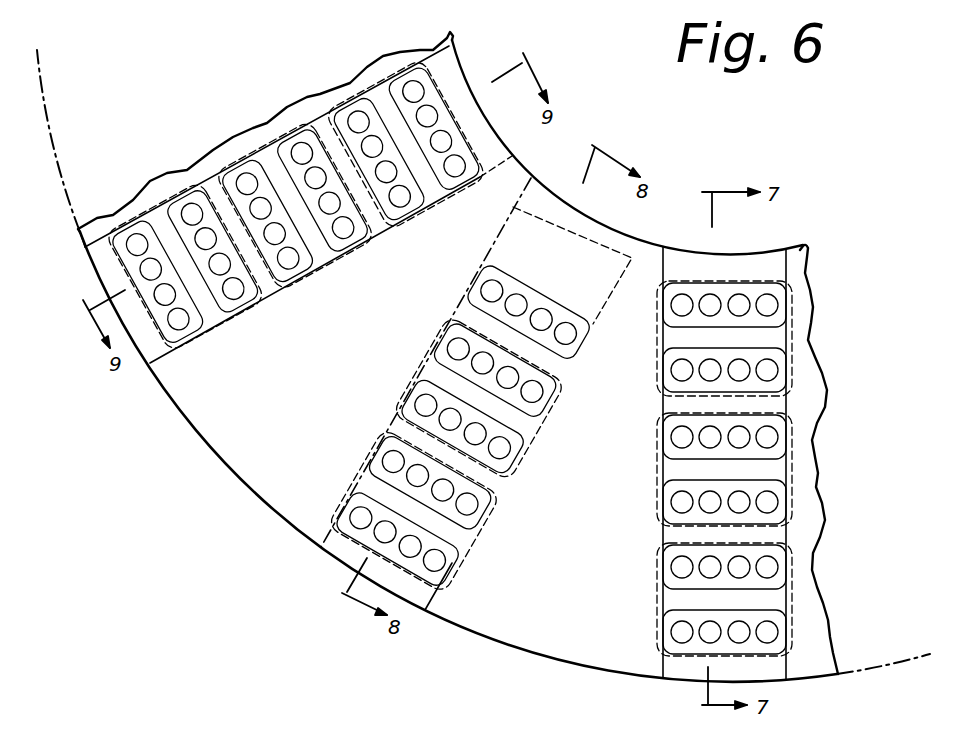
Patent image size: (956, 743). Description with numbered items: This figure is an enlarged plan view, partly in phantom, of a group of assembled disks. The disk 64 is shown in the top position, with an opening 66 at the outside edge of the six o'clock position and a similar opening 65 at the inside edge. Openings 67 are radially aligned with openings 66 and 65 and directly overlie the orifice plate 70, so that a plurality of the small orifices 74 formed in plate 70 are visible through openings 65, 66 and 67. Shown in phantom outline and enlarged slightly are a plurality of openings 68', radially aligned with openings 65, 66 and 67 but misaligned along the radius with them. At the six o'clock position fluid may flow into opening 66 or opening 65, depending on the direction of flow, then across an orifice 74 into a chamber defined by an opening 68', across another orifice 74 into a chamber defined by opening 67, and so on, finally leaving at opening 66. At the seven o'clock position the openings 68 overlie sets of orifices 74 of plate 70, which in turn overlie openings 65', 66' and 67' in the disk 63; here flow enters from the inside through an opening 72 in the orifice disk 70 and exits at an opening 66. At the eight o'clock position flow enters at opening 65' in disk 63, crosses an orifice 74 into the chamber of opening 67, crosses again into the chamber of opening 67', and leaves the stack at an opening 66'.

The disk 63 is at (540, 425).
The disk 64 is at (527, 653).
The opening 65 is at (605, 429).
The opening 65' is at (267, 133).
The opening 66 is at (478, 452).
The opening 66' is at (331, 271).
The openings 67 is at (559, 425).
The opening 67' is at (295, 205).
The openings 68 is at (232, 272).
The openings 68' is at (448, 357).
The orifice plate 70 is at (658, 636).
The opening 72 is at (618, 249).
The orifices 74 is at (243, 296).